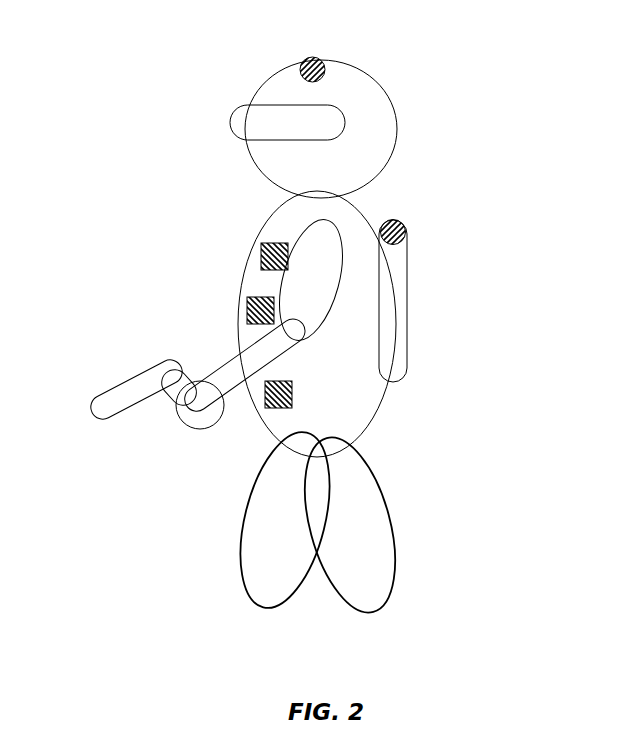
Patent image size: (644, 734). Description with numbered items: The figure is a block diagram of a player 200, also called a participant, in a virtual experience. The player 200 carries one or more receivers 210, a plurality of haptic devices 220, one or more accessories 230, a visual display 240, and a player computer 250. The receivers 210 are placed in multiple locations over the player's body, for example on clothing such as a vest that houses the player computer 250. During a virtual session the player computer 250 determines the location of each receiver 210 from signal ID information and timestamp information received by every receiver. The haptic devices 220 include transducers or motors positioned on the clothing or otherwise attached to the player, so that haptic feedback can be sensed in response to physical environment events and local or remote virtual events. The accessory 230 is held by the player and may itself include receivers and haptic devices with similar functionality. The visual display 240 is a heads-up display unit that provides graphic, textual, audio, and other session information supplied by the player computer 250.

The player 200 is at (280, 209).
The receiver 210 is at (323, 65).
The haptic device 220 is at (268, 256).
The accessory 230 is at (100, 406).
The visual display 240 is at (238, 125).
The player computer 250 is at (393, 262).